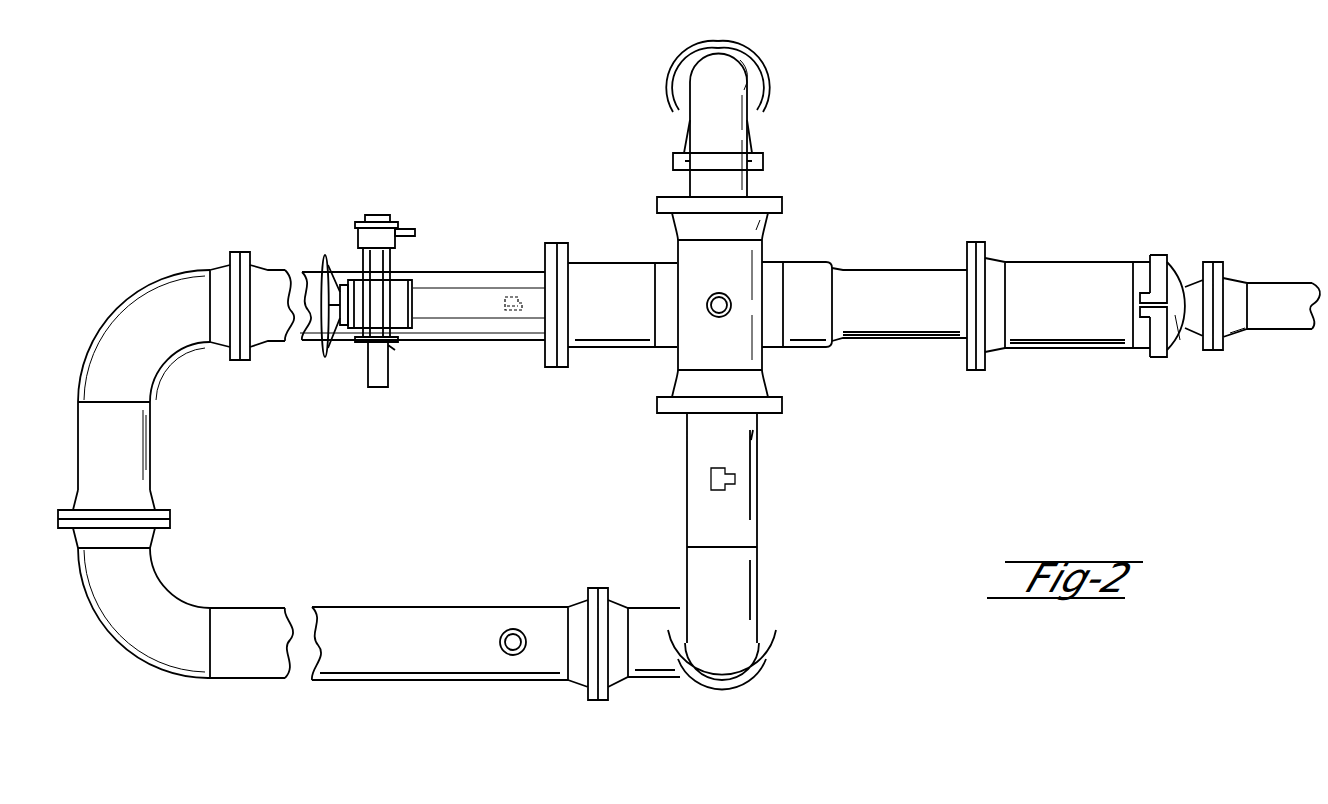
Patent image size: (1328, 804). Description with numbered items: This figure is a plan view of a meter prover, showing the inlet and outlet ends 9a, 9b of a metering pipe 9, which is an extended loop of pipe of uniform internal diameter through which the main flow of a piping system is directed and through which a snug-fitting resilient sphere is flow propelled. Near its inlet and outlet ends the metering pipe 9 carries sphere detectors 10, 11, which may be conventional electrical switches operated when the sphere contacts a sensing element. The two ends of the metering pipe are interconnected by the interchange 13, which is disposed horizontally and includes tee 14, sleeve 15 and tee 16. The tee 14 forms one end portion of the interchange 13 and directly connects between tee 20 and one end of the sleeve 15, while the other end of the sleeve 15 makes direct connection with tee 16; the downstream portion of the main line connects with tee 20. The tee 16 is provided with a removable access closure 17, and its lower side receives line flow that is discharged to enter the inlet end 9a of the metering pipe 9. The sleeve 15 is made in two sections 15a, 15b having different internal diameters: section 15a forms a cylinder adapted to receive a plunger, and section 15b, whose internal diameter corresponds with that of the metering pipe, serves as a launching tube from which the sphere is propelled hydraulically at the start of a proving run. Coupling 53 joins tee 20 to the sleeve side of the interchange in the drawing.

The metering pipe 9 is at (160, 444).
The inlet end 9a is at (468, 280).
The outlet end 9b is at (655, 617).
The sphere detector 10 is at (527, 297).
The sphere detector 11 is at (512, 628).
The interchange 13 is at (933, 262).
The tee 14 is at (670, 267).
The sleeve 15 is at (868, 280).
The sleeve section 15a is at (813, 338).
The sleeve section 15b is at (900, 329).
The tee 16 is at (1058, 270).
The removable access closure 17 is at (1168, 333).
The tee 20 is at (752, 257).
The coupling 53 is at (823, 270).